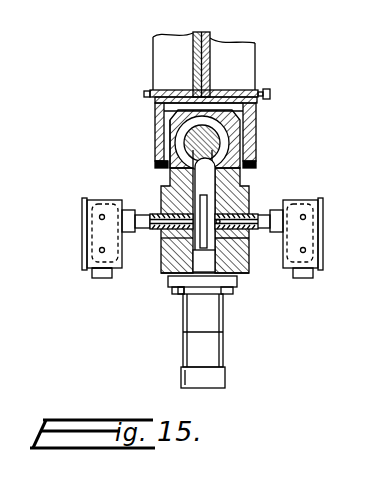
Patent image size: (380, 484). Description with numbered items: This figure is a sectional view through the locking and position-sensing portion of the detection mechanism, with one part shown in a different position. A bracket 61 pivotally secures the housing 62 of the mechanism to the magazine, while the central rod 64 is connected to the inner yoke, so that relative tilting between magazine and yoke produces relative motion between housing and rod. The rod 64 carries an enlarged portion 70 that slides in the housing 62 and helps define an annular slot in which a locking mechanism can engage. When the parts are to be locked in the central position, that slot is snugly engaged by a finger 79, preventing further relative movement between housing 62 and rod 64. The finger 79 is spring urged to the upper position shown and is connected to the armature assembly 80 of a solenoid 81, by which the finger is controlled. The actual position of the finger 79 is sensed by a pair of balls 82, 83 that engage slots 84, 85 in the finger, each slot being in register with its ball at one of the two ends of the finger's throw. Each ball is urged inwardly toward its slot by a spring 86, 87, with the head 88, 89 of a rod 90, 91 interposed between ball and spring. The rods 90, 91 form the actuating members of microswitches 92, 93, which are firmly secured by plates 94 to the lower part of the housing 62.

The bracket 61 is at (242, 84).
The housing 62 is at (250, 122).
The central rod 64 is at (208, 143).
The enlarged portion 70 is at (170, 133).
The finger 79 is at (166, 170).
The armature assembly 80 is at (222, 358).
The solenoid 81 is at (218, 322).
The ball 82 is at (181, 290).
The ball 83 is at (244, 198).
The slot 84 is at (185, 200).
The slot 85 is at (224, 292).
The spring 86 is at (138, 250).
The spring 87 is at (260, 208).
The head 88 is at (169, 274).
The head 89 is at (249, 246).
The rod 90 is at (152, 212).
The rod 91 is at (292, 206).
The microswitch 92 is at (100, 229).
The microswitch 93 is at (300, 240).
The plate 94 is at (128, 252).